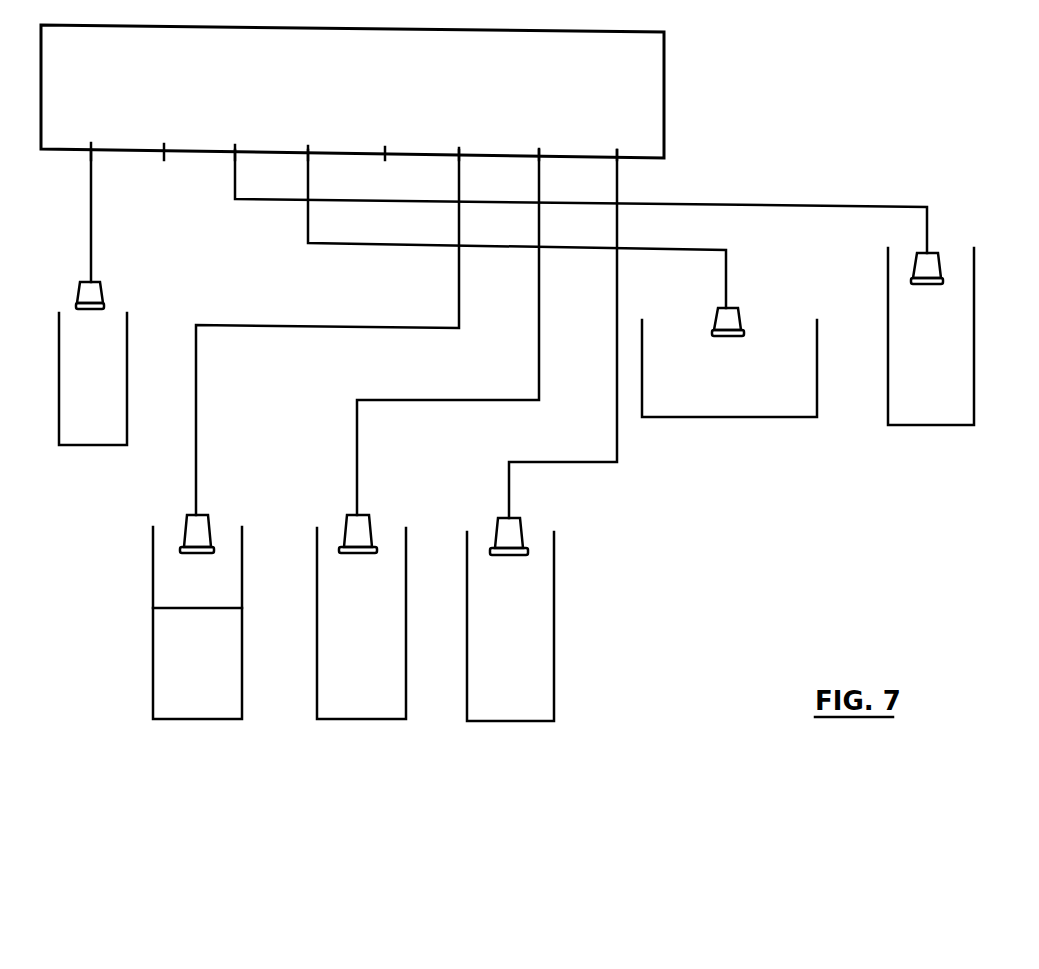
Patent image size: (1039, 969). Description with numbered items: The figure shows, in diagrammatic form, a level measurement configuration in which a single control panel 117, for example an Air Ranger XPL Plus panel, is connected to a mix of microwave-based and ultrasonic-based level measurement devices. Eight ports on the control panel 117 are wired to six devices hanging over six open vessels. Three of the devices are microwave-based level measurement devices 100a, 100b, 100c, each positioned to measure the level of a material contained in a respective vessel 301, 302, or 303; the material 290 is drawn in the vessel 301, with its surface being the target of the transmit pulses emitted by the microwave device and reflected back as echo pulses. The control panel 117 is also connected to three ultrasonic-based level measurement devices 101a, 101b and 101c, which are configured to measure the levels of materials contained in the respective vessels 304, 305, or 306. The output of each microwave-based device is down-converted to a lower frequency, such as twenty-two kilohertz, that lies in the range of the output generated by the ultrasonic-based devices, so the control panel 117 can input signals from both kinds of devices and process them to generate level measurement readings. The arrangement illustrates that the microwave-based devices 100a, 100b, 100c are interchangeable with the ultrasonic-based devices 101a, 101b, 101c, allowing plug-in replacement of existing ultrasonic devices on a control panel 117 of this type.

The control panel 117 is at (664, 82).
The microwave-based level measurement device 100a is at (208, 518).
The microwave-based level measurement device 100b is at (520, 520).
The microwave-based level measurement device 100c is at (100, 285).
The ultrasonic-based level measurement device 101a is at (370, 517).
The ultrasonic-based level measurement device 101b is at (738, 318).
The ultrasonic-based level measurement device 101c is at (938, 262).
The material 290 is at (214, 642).
The vessel 301 is at (242, 698).
The vessel 302 is at (554, 700).
The vessel 303 is at (127, 357).
The vessel 304 is at (406, 698).
The vessel 305 is at (817, 366).
The vessel 306 is at (974, 366).